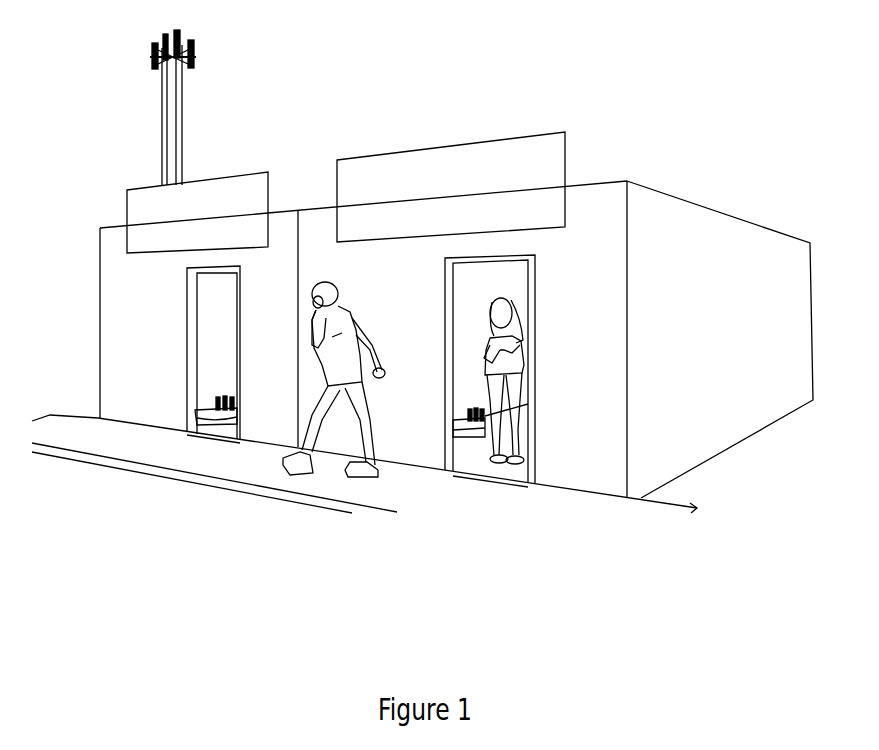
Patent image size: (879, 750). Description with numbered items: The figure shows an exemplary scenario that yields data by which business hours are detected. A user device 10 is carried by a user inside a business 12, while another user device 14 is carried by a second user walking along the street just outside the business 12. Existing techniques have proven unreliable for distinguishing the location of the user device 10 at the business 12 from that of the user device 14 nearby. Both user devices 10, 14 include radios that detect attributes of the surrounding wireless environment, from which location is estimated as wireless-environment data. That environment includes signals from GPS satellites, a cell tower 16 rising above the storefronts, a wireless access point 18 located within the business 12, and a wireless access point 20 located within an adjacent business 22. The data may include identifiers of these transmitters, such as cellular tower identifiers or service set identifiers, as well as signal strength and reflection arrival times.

The user device 10 is at (487, 330).
The business 12 is at (583, 205).
The user device 14 is at (337, 298).
The cell tower 16 is at (178, 87).
The wireless access point 18 is at (459, 413).
The wireless access point 20 is at (205, 403).
The adjacent business 22 is at (277, 226).